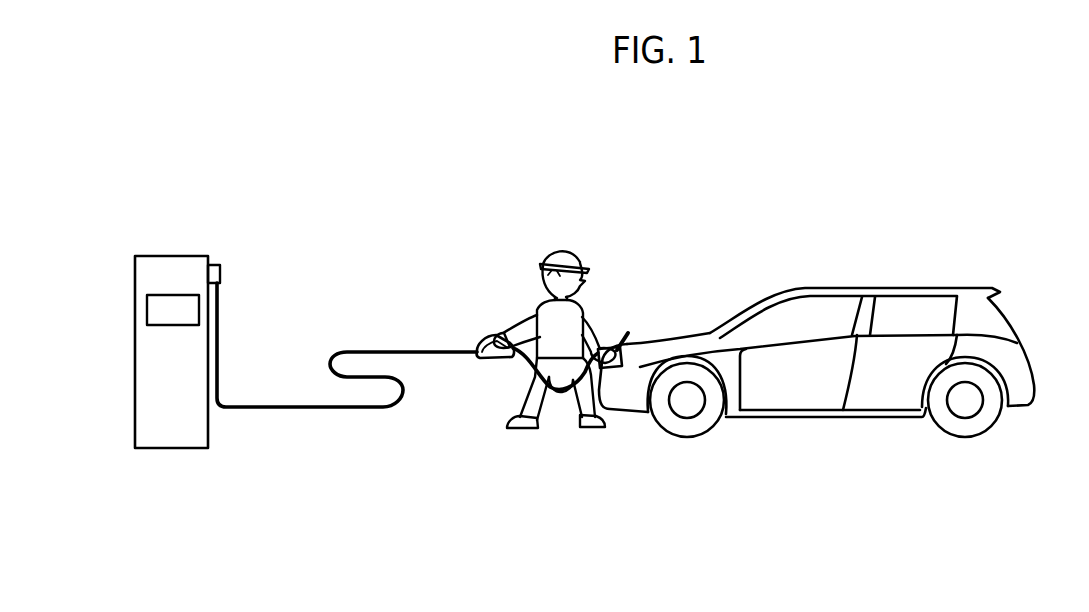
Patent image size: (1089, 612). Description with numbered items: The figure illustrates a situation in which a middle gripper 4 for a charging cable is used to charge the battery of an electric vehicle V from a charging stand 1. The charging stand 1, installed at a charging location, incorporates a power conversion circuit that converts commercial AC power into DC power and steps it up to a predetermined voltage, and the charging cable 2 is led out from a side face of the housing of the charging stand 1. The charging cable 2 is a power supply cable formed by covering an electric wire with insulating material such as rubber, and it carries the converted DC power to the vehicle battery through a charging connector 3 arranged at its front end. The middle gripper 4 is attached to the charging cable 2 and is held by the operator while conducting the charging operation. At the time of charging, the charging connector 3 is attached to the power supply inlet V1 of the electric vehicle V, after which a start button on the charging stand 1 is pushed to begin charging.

The charging stand 1 is at (172, 270).
The charging cable 2 is at (383, 352).
The charging connector 3 is at (609, 346).
The middle gripper for a charging cable 4 is at (485, 331).
The electric vehicle V is at (877, 283).
The power supply inlet V1 is at (662, 343).